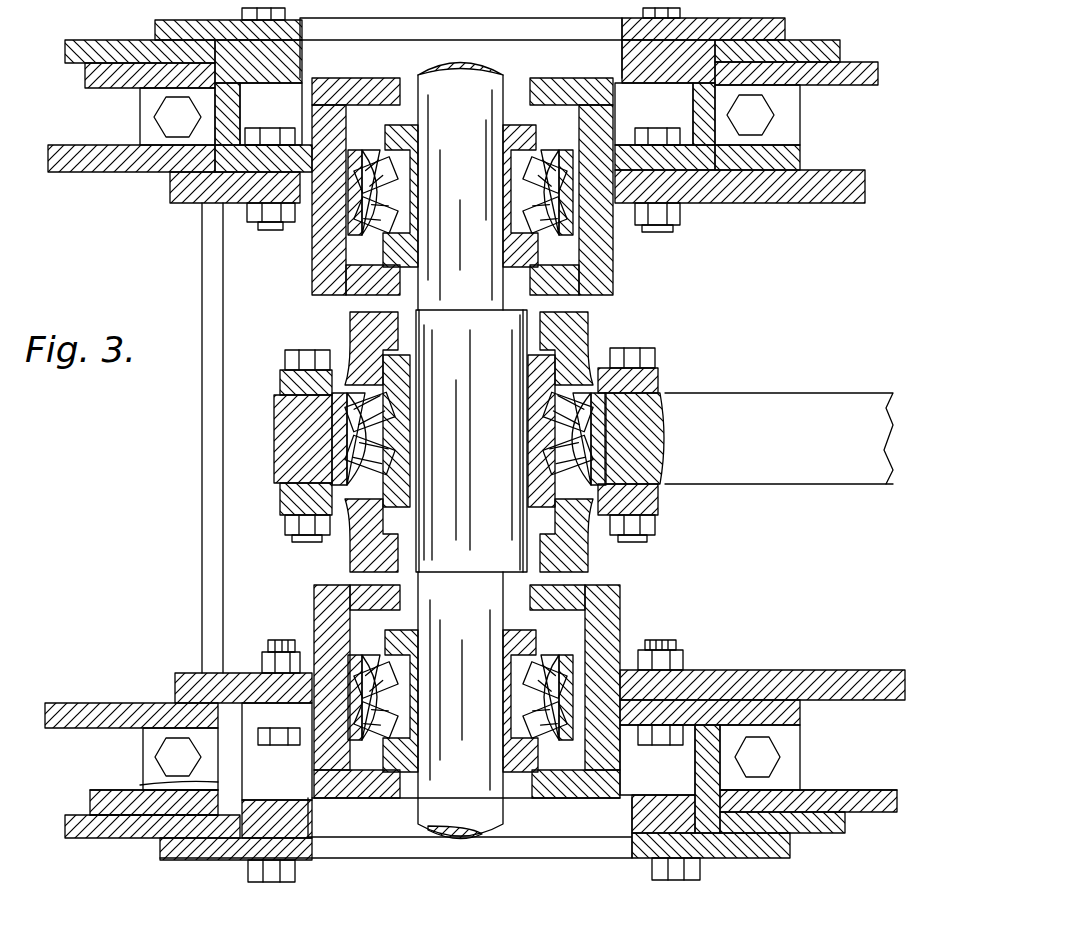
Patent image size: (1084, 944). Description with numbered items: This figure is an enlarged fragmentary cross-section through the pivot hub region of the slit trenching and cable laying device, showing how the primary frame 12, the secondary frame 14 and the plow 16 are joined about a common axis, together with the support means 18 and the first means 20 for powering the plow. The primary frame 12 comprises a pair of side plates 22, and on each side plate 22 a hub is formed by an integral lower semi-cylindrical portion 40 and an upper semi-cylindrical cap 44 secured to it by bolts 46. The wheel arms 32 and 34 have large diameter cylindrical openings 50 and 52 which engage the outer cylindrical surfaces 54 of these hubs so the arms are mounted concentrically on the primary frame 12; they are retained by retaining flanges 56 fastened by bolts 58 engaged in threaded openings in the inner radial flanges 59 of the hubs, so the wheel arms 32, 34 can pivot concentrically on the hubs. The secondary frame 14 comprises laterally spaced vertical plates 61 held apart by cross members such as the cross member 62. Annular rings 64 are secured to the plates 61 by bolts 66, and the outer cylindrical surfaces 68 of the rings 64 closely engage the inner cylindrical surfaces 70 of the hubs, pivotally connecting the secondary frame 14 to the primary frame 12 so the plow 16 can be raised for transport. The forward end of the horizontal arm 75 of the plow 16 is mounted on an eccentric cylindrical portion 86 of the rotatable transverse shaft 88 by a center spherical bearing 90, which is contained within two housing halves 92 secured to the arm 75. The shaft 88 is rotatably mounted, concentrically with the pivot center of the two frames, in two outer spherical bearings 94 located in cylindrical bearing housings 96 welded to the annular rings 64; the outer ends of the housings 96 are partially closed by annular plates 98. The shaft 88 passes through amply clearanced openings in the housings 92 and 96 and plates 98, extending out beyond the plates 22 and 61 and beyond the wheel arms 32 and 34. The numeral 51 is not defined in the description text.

The primary frame 12 is at (130, 188).
The secondary frame 14 is at (760, 435).
The slit trenching and cable laying plow 16 is at (779, 433).
The support means 18 is at (90, 30).
The first means for powering the plow 20 is at (492, 434).
The side plates 22 is at (68, 172).
The wheel arm 32 is at (82, 58).
The wheel arm 34 is at (95, 80).
The lower semi-cylindrical portions 40 is at (705, 773).
The upper semi-cylindrical caps 44 is at (150, 748).
The bolts 46 is at (760, 740).
The cylindrical opening 50 is at (630, 52).
The hex nut 51 is at (185, 98).
The cylindrical opening 52 is at (242, 890).
The outer cylindrical surfaces 54 is at (156, 770).
The retaining flanges 56 is at (742, 872).
The bolts 58 is at (288, 12).
The inner radial flanges 59 is at (605, 78).
The vertical plates 61 is at (785, 203).
The cross member 62 is at (202, 443).
The annular rings 64 is at (668, 165).
The bolts 66 is at (656, 235).
The outer cylindrical surfaces 68 is at (702, 160).
The inner cylindrical surfaces 70 is at (690, 100).
The horizontal arm 75 is at (784, 488).
The eccentric cylindrical portion 86 is at (471, 481).
The transverse shaft 88 is at (490, 834).
The center spherical bearing 90 is at (655, 416).
The housing halves 92 is at (362, 325).
The outer spherical bearings 94 is at (548, 168).
The cylindrical bearing housings 96 is at (435, 436).
The annular plates 98 is at (393, 72).